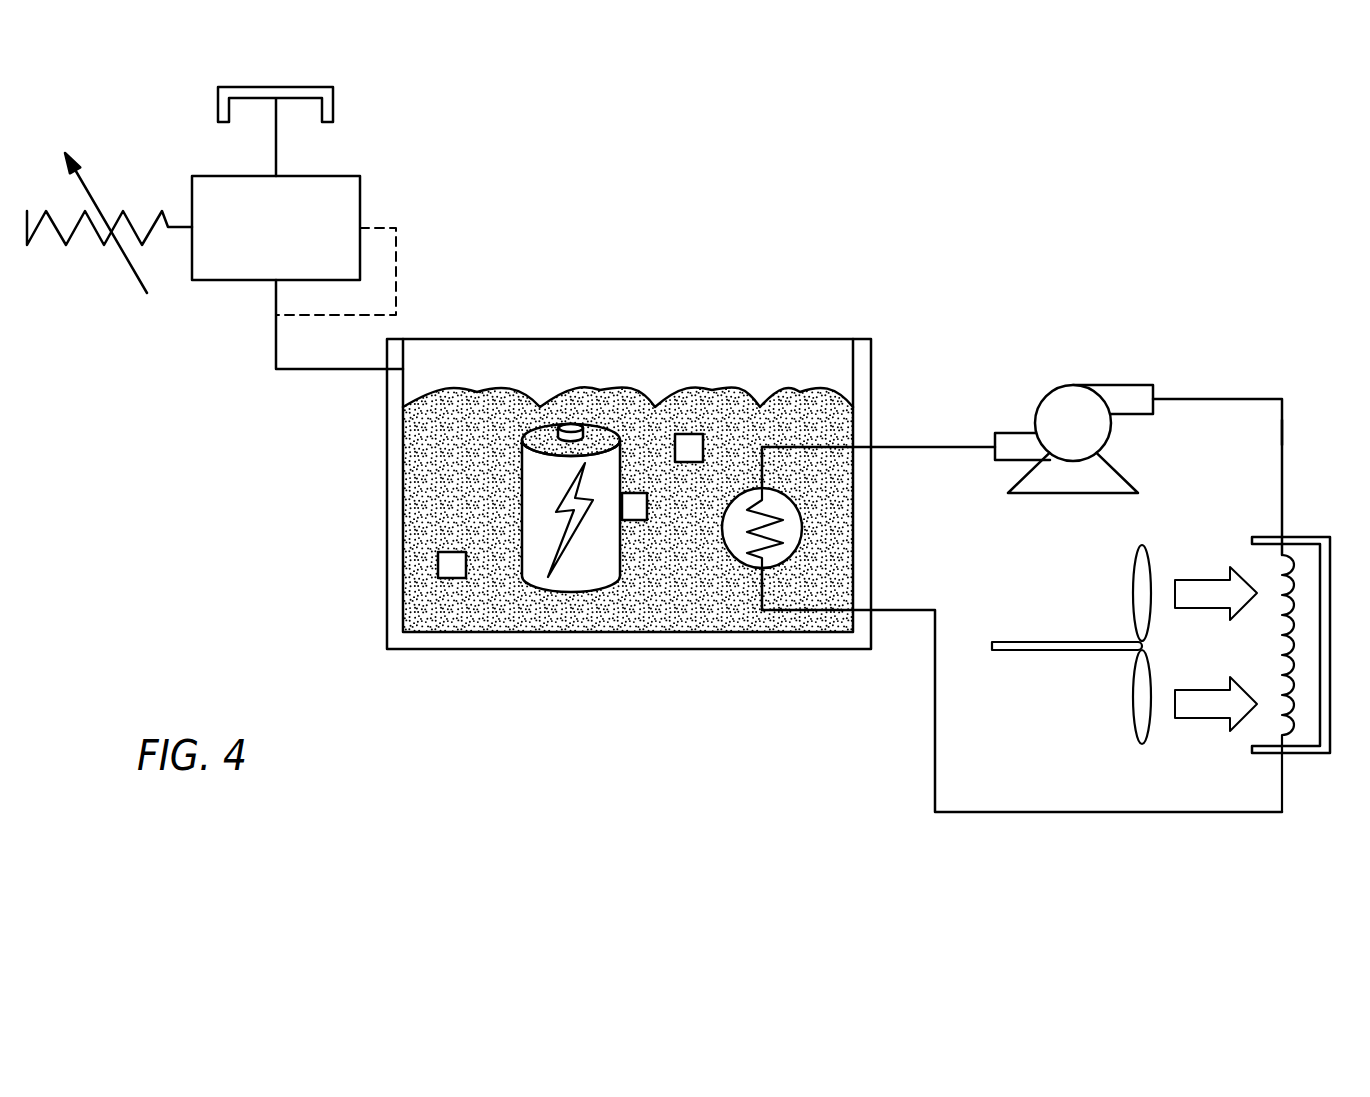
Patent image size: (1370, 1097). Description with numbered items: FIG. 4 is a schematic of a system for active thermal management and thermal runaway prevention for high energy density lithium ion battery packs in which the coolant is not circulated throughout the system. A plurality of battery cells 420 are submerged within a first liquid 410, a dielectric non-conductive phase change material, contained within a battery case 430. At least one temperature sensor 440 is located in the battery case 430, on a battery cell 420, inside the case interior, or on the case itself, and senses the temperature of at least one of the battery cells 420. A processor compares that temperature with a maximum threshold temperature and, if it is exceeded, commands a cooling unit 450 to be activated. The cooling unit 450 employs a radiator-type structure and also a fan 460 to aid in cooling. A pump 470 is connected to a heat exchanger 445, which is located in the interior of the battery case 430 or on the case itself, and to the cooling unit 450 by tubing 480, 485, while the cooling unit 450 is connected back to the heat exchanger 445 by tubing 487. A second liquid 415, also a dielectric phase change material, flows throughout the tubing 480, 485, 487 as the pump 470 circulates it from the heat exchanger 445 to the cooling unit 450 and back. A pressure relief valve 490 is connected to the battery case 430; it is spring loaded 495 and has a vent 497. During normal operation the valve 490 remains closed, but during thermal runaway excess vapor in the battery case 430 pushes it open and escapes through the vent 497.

The liquid 410 is at (458, 478).
The liquid 415 is at (1221, 399).
The battery cells 420 is at (543, 437).
The battery case 430 is at (388, 575).
The temperature sensor 440 is at (453, 578).
The heat exchanger 445 is at (792, 528).
The cooling unit 450 is at (1312, 753).
The fan 460 is at (1128, 646).
The pump 470 is at (1065, 412).
The tubing 480 is at (924, 447).
The tubing 485 is at (1282, 433).
The tubing 487 is at (1007, 812).
The pressure relief valve 490 is at (362, 197).
The spring loading 495 is at (110, 245).
The vent 497 is at (334, 103).